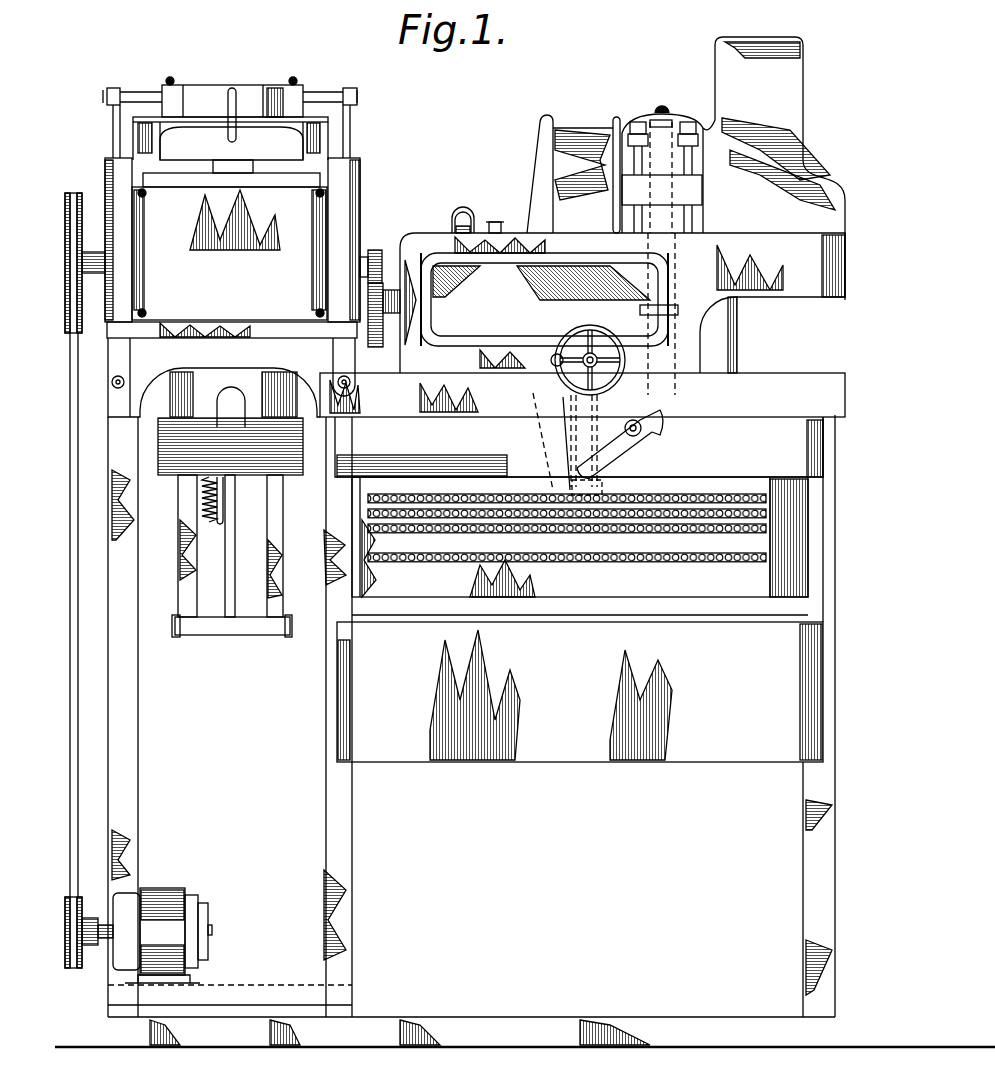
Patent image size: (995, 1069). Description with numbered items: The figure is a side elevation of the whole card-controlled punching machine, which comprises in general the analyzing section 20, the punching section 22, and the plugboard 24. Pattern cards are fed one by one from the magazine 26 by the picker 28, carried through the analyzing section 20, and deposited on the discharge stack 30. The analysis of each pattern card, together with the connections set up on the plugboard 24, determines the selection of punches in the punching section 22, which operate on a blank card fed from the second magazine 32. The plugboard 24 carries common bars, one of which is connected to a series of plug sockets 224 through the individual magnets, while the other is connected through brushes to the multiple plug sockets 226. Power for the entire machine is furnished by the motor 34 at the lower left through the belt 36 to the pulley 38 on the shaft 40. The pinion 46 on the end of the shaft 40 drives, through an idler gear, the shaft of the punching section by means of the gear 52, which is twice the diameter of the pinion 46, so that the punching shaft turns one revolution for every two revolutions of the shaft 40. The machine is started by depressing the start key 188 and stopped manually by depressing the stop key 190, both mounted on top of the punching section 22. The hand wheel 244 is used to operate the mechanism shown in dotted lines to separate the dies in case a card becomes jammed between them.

The analyzing section 20 is at (232, 262).
The punching section 22 is at (622, 314).
The plugboard 24 is at (579, 516).
The magazine 26 is at (293, 93).
The picker 28 is at (333, 96).
The discharge stack 30 is at (292, 456).
The magazine 32 is at (572, 135).
The motor 34 is at (158, 918).
The belt 36 is at (131, 672).
The pulley 38 is at (70, 192).
The shaft 40 is at (92, 252).
The pinion 46 is at (376, 249).
The gear 52 is at (378, 346).
The start key 188 is at (465, 210).
The stop key 190 is at (492, 221).
The plug sockets 224 is at (663, 560).
The plug sockets 226 is at (678, 527).
The hand wheel 244 is at (597, 343).